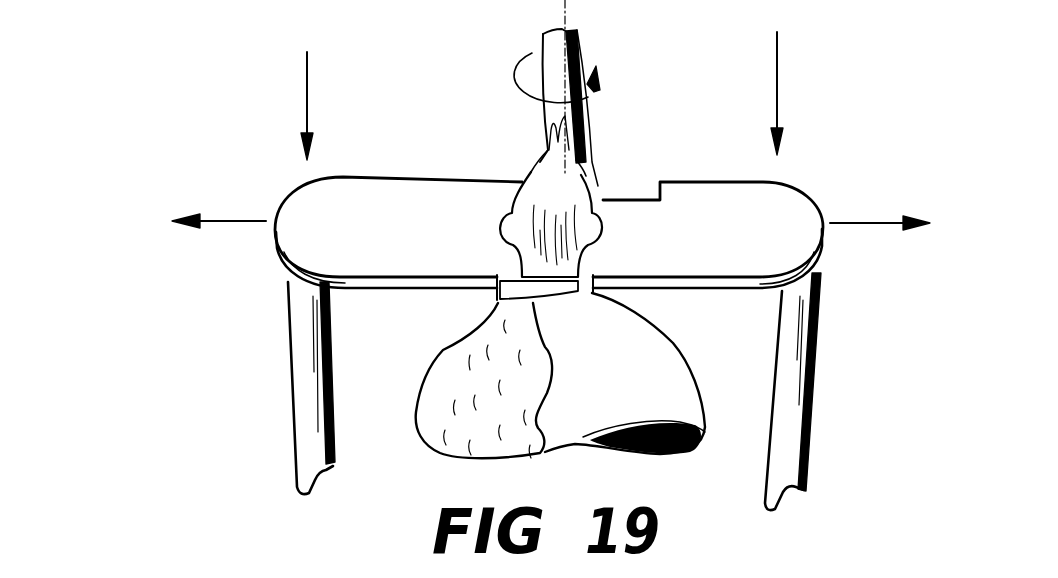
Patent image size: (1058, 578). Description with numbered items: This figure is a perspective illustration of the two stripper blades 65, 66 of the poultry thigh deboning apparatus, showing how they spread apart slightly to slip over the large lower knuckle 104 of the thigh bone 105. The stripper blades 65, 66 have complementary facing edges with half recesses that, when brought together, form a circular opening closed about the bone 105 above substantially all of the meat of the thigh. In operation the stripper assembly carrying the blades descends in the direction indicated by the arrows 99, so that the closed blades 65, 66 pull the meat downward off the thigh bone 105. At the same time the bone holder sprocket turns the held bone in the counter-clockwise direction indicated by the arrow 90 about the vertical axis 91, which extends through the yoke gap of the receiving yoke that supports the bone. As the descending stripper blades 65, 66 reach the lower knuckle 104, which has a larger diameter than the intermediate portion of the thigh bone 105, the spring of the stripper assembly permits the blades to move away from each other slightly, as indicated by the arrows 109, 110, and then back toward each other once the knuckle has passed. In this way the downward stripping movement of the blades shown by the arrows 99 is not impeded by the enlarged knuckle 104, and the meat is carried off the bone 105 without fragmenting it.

The stripper blade 65 is at (413, 188).
The stripper blade 66 is at (734, 195).
The arrow indicating counter-clockwise rotation 90 is at (512, 78).
The vertical axis 91 is at (567, 167).
The arrows indicating downward direction 99 is at (322, 72).
The lower knuckle 104 is at (527, 186).
The thigh bone 105 is at (548, 112).
The arrow indicating blade spreading 109 is at (884, 225).
The arrow indicating blade spreading 110 is at (259, 216).